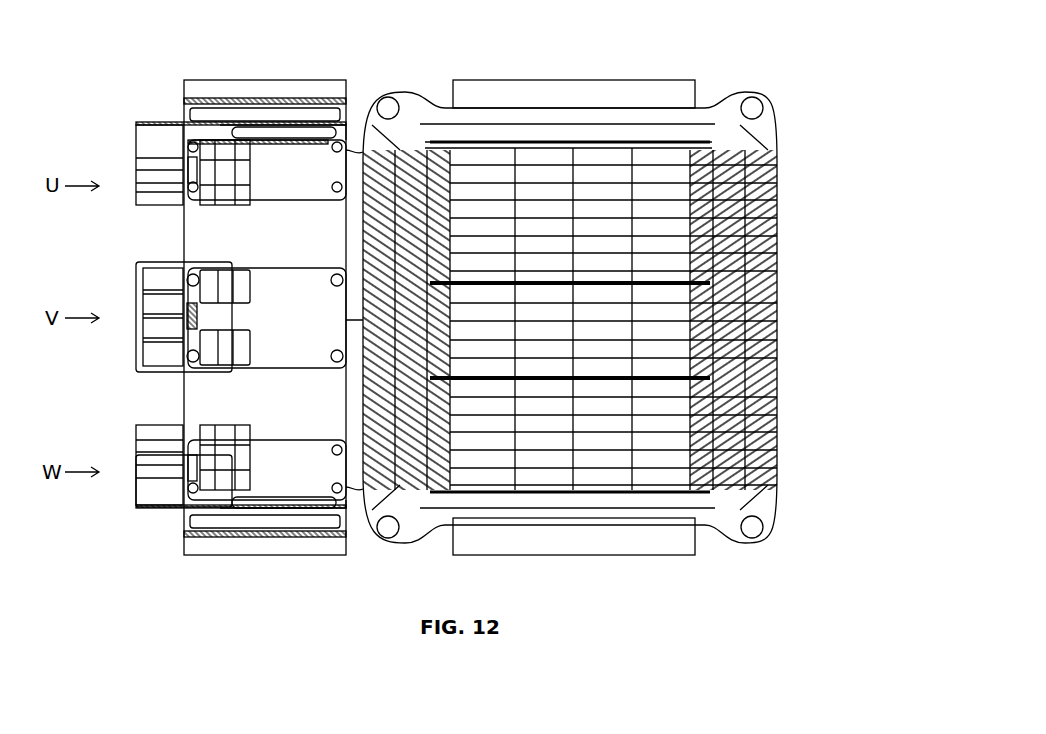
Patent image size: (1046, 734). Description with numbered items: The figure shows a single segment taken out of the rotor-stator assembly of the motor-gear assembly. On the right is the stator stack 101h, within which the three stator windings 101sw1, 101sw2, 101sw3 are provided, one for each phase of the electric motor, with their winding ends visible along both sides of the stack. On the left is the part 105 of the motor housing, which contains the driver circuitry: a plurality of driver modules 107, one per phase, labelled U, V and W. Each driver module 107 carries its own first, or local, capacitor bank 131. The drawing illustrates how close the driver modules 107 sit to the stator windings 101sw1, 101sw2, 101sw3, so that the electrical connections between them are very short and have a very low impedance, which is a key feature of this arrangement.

The part of the motor housing 105 is at (293, 82).
The stator stack 101h is at (595, 95).
The first capacitor bank 131 is at (170, 183).
The driver module 107 is at (131, 160).
The stator winding 101sw1 is at (609, 220).
The stator winding 101sw2 is at (606, 333).
The stator winding 101sw3 is at (609, 437).